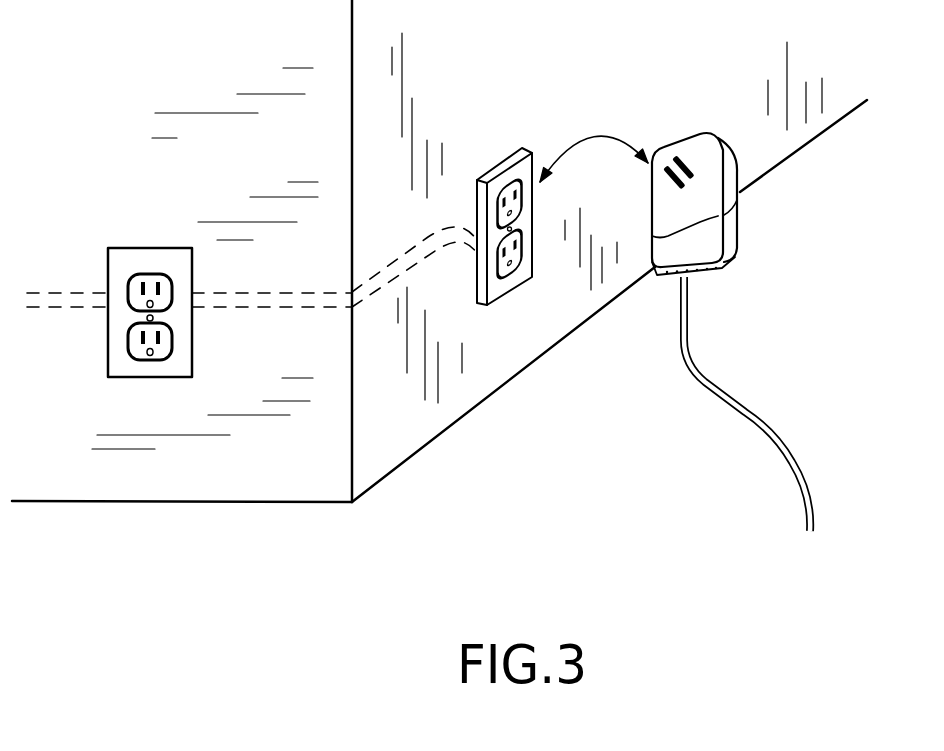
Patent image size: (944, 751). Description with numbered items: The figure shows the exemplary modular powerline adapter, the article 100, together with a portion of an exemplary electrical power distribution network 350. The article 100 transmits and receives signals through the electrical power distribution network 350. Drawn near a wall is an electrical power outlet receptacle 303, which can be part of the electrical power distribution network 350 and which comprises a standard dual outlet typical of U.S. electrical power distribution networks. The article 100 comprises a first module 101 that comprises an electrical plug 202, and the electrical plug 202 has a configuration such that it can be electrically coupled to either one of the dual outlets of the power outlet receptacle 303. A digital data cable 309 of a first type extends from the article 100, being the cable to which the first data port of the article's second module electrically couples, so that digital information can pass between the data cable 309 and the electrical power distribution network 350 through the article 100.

The electrical power distribution network 350 is at (108, 172).
The electrical power outlet receptacle 303 is at (532, 172).
The article 100 is at (810, 177).
The first module 101 is at (742, 192).
The electrical plug 202 is at (690, 157).
The digital data cable 309 is at (722, 397).